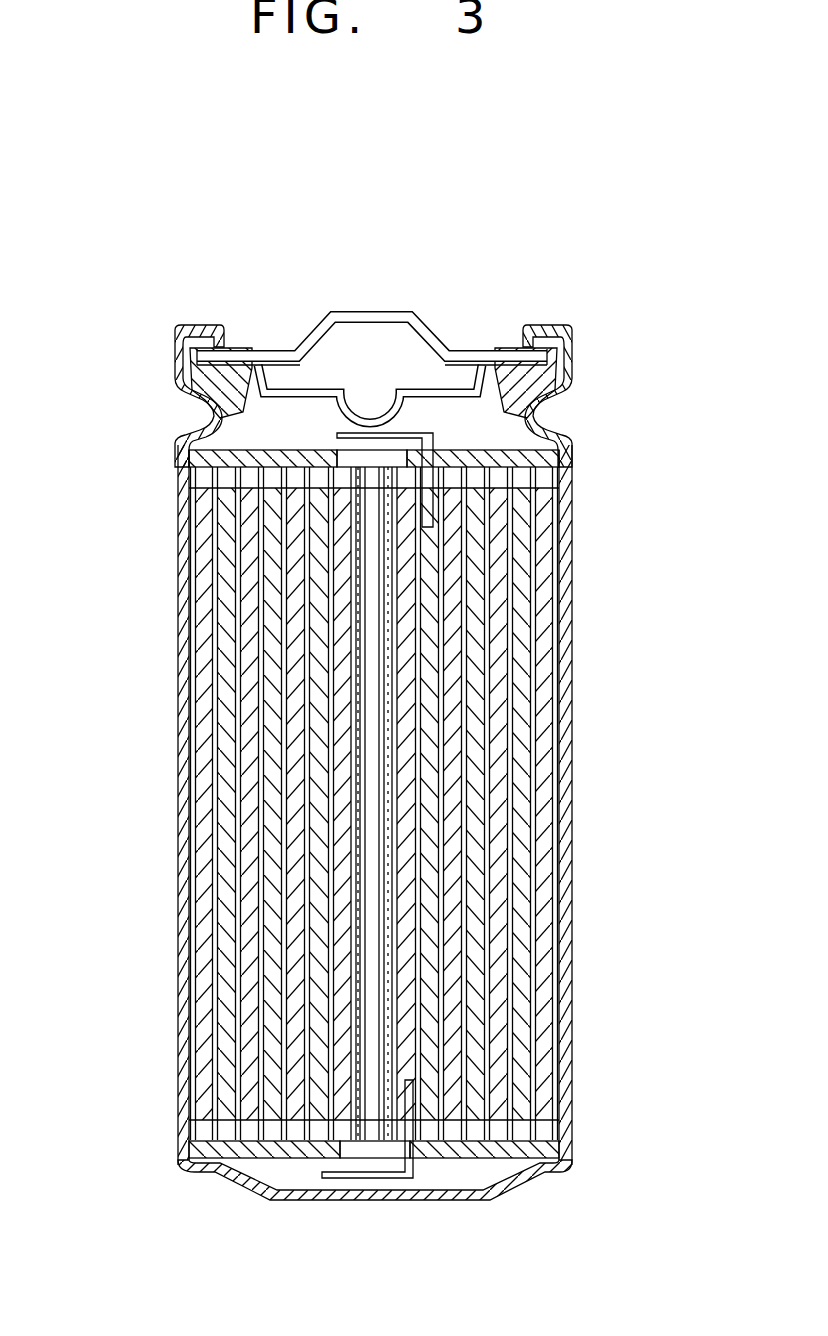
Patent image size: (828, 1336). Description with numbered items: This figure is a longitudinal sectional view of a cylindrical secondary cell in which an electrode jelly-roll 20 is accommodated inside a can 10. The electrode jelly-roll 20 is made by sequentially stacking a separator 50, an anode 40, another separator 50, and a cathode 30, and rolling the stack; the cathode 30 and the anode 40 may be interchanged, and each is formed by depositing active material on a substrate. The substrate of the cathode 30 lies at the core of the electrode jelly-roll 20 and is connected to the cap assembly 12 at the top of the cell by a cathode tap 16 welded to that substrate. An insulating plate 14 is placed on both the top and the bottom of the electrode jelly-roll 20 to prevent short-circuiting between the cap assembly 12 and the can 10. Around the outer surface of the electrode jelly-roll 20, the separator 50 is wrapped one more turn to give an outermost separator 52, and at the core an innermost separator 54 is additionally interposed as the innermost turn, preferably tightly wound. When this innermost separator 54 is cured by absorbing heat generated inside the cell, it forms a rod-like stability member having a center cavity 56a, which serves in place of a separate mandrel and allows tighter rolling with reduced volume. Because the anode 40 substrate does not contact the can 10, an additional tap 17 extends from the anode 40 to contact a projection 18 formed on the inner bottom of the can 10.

The can 10 is at (421, 333).
The cap assembly 12 is at (420, 325).
The insulating plate 14 is at (232, 462).
The cathode tap 16 is at (338, 433).
The additional tap 17 is at (415, 1175).
The projection 18 is at (375, 1201).
The electrode jelly-roll 20 is at (423, 810).
The cathode 30 is at (525, 912).
The anode 40 is at (548, 985).
The separator 50 is at (226, 604).
The outermost separator 52 is at (183, 706).
The innermost separator 54 is at (358, 770).
The center cavity 56a is at (378, 838).